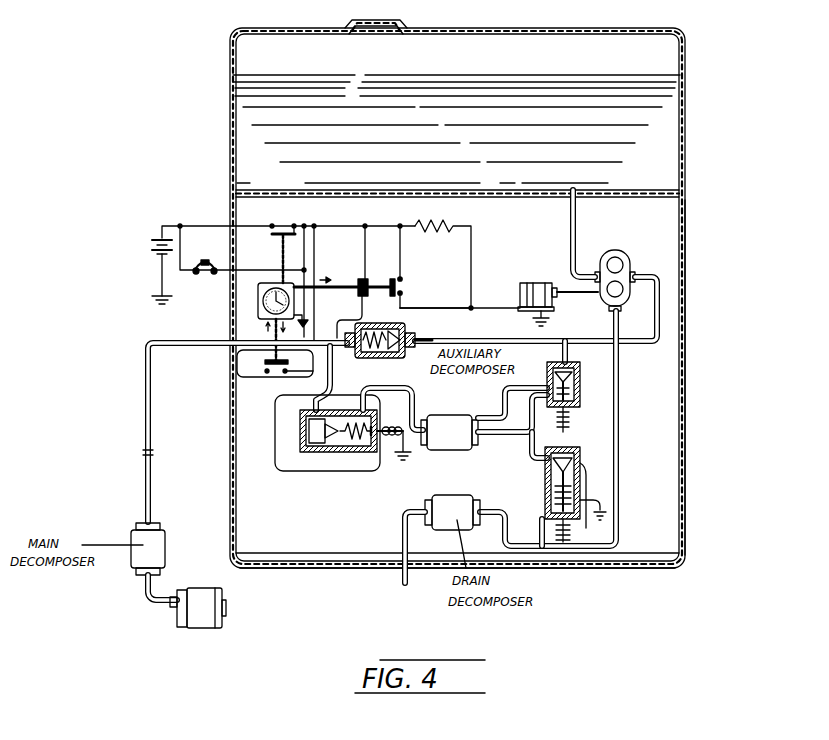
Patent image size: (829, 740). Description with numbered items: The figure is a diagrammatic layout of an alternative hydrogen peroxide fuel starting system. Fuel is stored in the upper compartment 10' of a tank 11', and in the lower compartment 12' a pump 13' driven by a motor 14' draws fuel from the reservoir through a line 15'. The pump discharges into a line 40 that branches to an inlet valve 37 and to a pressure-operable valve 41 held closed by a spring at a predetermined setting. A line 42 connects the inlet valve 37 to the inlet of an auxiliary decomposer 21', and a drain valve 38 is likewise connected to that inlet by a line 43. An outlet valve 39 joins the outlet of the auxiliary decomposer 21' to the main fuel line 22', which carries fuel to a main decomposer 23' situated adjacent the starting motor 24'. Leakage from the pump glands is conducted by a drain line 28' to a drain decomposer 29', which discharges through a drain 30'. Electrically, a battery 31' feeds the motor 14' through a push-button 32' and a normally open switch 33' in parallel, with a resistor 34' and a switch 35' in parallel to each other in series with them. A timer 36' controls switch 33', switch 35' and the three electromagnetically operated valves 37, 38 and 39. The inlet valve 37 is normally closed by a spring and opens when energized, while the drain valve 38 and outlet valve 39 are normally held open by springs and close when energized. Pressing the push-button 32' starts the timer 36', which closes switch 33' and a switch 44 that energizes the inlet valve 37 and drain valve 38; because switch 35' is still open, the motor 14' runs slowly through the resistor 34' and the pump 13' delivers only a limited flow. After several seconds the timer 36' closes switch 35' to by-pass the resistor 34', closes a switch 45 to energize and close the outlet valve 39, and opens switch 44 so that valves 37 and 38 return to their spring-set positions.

The upper compartment 10' is at (479, 294).
The tank 11' is at (705, 377).
The lower compartment 12' is at (483, 515).
The pump 13' is at (624, 270).
The motor 14' is at (499, 287).
The line 15' is at (595, 233).
The auxiliary decomposer 21' is at (449, 418).
The line 22' is at (245, 416).
The main decomposer 23' is at (167, 561).
The starting motor 24' is at (219, 608).
The drain line 28' is at (570, 428).
The drain decomposer 29' is at (451, 501).
The drain 30' is at (394, 563).
The battery 31' is at (146, 258).
The push-button 32' is at (242, 250).
The normally open switch 33' is at (274, 243).
The resistor 34' is at (448, 258).
The switch 35' is at (424, 267).
The timer 36' is at (275, 302).
The inlet valve 37 is at (580, 375).
The drain valve 38 is at (580, 465).
The outlet valve 39 is at (356, 451).
The line 40 is at (504, 338).
The pressure-operable valve 41 is at (408, 334).
The line 42 is at (492, 418).
The line 43 is at (526, 456).
The switch 44 is at (263, 362).
The switch 45 is at (359, 280).